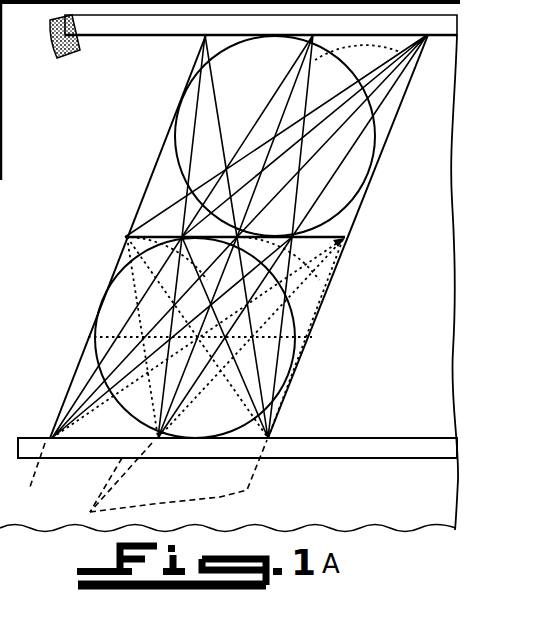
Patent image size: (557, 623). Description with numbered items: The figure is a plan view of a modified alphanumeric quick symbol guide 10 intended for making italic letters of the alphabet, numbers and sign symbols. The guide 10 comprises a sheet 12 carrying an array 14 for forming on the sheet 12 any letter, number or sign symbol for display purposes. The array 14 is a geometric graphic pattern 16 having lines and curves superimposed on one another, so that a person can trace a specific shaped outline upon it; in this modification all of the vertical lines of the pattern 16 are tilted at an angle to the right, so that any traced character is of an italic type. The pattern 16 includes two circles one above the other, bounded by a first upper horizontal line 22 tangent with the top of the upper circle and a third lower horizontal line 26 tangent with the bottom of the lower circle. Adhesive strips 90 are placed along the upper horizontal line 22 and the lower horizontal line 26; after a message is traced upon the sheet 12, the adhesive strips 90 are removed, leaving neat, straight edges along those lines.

The alphanumeric quick symbol guide 10 is at (480, 193).
The sheet 12 is at (448, 103).
The array 14 is at (362, 210).
The geometric graphic pattern 16 is at (330, 293).
The first upper horizontal line 22 is at (221, 36).
The third lower horizontal line 26 is at (233, 442).
The adhesive strips 90 is at (138, 26).